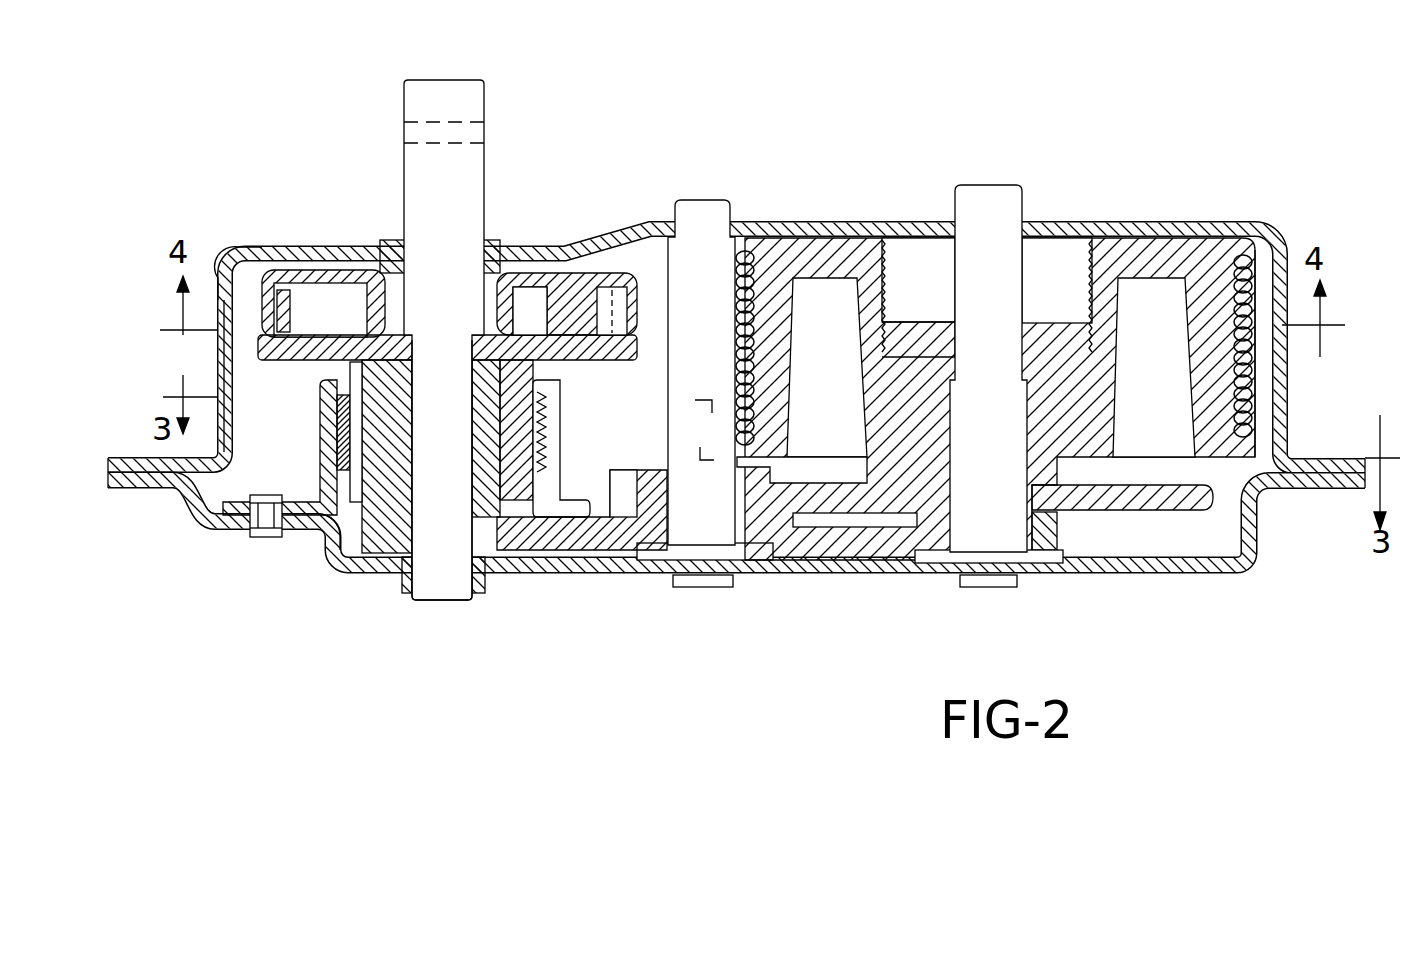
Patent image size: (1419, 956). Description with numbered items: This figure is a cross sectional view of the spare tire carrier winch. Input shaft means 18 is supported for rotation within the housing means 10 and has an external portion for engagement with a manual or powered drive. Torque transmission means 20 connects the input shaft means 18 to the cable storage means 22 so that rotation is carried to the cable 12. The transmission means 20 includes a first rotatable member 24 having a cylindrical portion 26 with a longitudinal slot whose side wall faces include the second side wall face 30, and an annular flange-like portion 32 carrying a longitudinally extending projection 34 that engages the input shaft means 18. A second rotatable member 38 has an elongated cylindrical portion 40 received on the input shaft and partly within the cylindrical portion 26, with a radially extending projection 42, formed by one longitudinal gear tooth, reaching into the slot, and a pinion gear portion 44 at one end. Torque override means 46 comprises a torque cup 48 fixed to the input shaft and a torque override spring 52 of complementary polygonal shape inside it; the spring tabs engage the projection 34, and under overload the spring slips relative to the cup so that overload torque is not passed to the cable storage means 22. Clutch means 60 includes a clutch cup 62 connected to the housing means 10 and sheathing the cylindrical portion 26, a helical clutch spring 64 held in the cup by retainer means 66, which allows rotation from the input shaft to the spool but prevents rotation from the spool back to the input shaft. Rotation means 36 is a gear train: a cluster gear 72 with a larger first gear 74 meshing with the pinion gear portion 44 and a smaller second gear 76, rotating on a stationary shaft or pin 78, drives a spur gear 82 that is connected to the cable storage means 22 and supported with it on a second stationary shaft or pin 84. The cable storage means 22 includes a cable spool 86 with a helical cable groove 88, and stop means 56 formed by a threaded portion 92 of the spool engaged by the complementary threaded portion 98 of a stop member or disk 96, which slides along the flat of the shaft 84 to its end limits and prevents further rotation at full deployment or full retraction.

The housing means 10 is at (608, 226).
The cable 12 is at (758, 236).
The input shaft means 18 is at (492, 152).
The torque transmission means 20 is at (306, 366).
The cable storage means 22 is at (1270, 385).
The first rotatable member 24 is at (695, 400).
The cylindrical portion 26 is at (478, 460).
The second side wall face 30 is at (322, 482).
The annular radially extending flange-like portion 32 is at (584, 356).
The longitudinally extending projection 34 is at (566, 300).
The rotation means 36 is at (532, 582).
The second rotatable member 38 is at (345, 562).
The elongated cylindrical portion 40 is at (478, 424).
The radially extending projection 42 is at (336, 520).
The pinion gear portion 44 is at (500, 580).
The torque override means 46 is at (312, 268).
The torque cup 48 is at (228, 268).
The torque override spring 52 is at (294, 316).
The stop means 56 is at (942, 300).
The clutch means 60 is at (310, 436).
The clutch cup 62 is at (560, 426).
The helical clutch spring 64 is at (550, 456).
The retainer means 66 is at (553, 582).
The cluster gear 72 is at (812, 572).
The first gear 74 is at (604, 552).
The second gear 76 is at (648, 516).
The stationary shaft or pin 78 is at (716, 356).
The spur gear 82 is at (740, 268).
The second stationary shaft or pin 84 is at (1004, 473).
The cable spool 86 is at (1090, 408).
The helical cable groove 88 is at (1236, 262).
The threaded portion 92 is at (1088, 272).
The stop member or disk 96 is at (880, 368).
The complementary threaded portion 98 is at (886, 336).